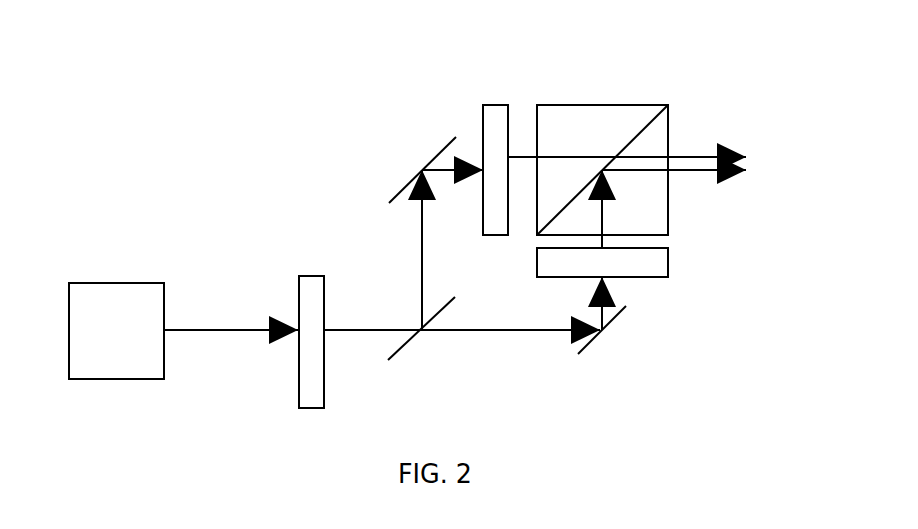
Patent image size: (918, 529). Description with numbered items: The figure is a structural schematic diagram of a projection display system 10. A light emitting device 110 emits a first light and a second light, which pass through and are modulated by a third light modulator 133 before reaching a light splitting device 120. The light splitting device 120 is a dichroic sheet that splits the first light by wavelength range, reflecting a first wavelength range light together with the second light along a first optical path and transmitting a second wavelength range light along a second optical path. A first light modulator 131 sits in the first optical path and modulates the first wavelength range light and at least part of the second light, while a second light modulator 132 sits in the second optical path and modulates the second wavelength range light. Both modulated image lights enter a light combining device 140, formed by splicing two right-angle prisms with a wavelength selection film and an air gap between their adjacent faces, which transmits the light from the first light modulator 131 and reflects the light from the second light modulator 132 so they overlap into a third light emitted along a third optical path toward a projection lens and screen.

The projection display system 10 is at (185, 57).
The light emitting device 110 is at (118, 308).
The light splitting device 120 is at (402, 350).
The first light modulator 131 is at (483, 108).
The second light modulator 132 is at (668, 275).
The third light modulator 133 is at (307, 277).
The light combining device 140 is at (561, 118).